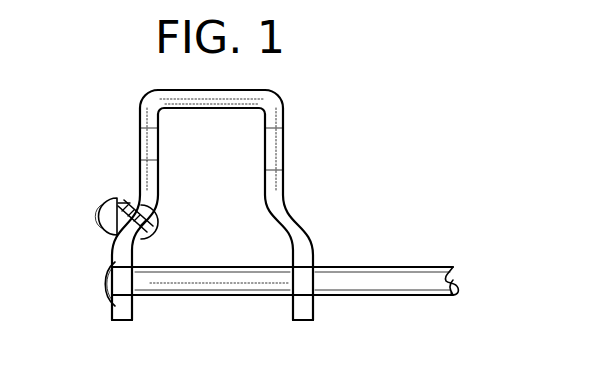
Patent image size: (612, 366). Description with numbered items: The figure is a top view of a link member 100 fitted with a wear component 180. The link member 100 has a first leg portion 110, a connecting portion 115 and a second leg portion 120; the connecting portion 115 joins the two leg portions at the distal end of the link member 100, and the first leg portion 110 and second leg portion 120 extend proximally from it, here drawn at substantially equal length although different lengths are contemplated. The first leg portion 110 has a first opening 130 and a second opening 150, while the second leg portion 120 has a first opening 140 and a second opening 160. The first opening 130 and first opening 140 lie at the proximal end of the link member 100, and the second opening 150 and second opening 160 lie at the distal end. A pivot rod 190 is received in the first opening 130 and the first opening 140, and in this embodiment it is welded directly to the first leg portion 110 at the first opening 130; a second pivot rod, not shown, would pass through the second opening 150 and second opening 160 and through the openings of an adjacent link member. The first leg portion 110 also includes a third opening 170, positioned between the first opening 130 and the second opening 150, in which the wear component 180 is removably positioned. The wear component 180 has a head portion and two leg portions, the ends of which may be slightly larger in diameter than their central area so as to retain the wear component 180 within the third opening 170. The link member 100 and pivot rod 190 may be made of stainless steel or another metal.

The link member 100 is at (370, 168).
The first leg portion 110 is at (142, 164).
The connecting portion 115 is at (217, 93).
The second leg portion 120 is at (283, 182).
The first opening 130 is at (112, 270).
The first opening 140 is at (315, 297).
The second opening 150 is at (142, 131).
The second opening 160 is at (284, 128).
The third opening 170 is at (148, 218).
The wear component 180 is at (98, 216).
The pivot rod 190 is at (455, 273).